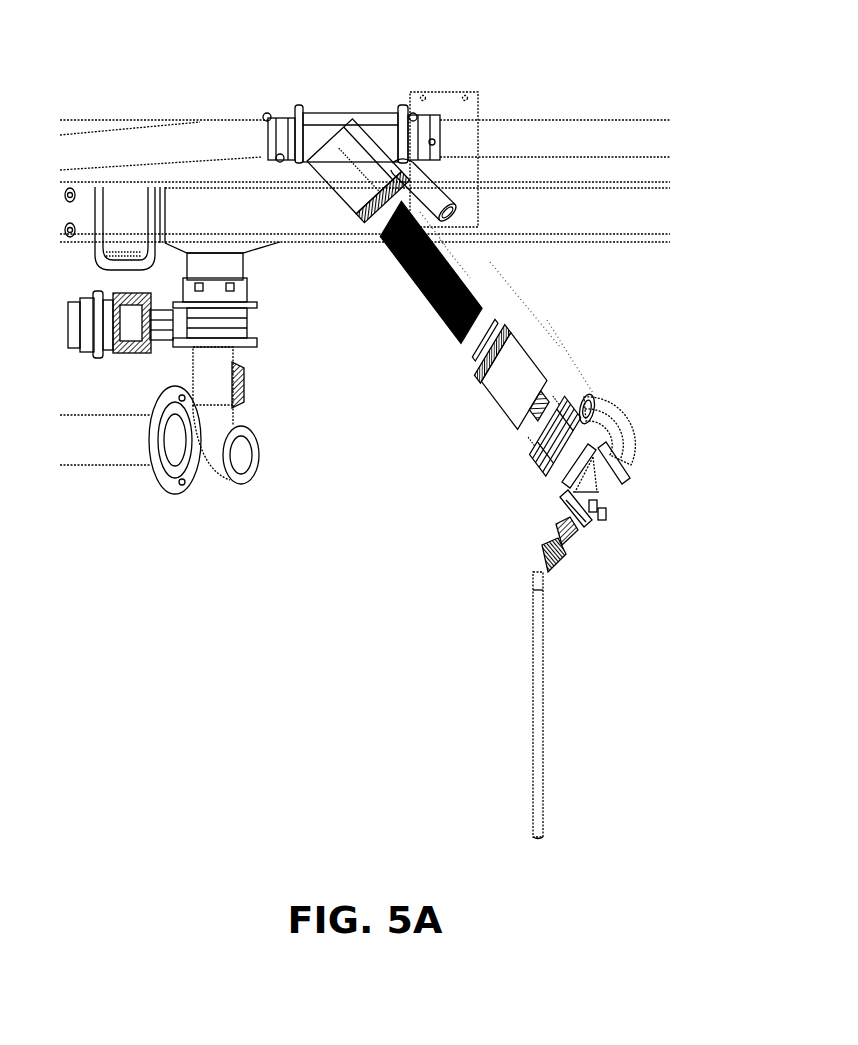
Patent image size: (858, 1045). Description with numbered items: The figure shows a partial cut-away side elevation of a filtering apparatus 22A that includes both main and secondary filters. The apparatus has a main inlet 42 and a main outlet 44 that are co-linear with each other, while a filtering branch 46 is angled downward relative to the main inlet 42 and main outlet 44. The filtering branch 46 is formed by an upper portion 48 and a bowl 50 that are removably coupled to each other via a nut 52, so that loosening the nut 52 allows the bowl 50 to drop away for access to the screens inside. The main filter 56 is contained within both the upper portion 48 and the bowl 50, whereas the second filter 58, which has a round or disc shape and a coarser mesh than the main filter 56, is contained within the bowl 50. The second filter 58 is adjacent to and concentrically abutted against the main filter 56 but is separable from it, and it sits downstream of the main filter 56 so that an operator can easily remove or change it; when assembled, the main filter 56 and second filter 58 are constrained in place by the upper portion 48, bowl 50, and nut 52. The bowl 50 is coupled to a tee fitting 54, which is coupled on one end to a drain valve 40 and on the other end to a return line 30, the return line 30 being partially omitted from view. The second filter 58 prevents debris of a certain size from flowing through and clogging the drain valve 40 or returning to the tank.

The filtering apparatus 22A is at (376, 399).
The return line 30 is at (453, 185).
The drain valve 40 is at (558, 550).
The main inlet 42 is at (305, 120).
The main outlet 44 is at (363, 115).
The filtering branch 46 is at (366, 325).
The upper portion 48 is at (345, 177).
The bowl 50 is at (530, 360).
The nut 52 is at (530, 460).
The tee fitting 54 is at (603, 500).
The main filter 56 is at (460, 275).
The second filter 58 is at (493, 325).